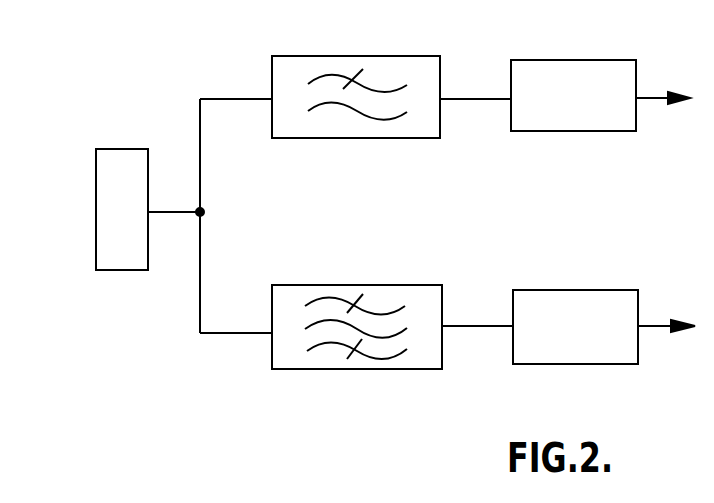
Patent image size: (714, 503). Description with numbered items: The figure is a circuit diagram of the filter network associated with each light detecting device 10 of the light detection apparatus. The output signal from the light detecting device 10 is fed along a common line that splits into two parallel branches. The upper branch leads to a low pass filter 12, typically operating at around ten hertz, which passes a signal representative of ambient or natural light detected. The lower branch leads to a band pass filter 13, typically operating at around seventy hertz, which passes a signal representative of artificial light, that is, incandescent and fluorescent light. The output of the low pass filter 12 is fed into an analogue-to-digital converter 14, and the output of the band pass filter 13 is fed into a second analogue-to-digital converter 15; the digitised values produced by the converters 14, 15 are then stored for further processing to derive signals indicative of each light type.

The light detecting device 10 is at (117, 200).
The low pass filter 12 is at (358, 56).
The band pass filter 13 is at (378, 285).
The analogue-to-digital converter 14 is at (580, 60).
The analogue-to-digital converter 15 is at (589, 290).